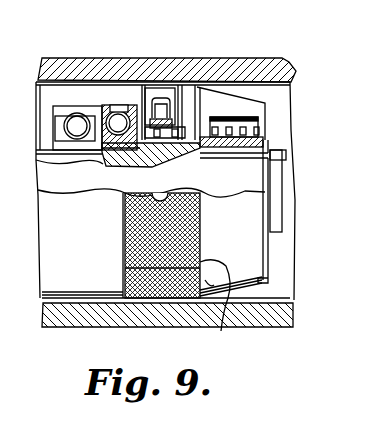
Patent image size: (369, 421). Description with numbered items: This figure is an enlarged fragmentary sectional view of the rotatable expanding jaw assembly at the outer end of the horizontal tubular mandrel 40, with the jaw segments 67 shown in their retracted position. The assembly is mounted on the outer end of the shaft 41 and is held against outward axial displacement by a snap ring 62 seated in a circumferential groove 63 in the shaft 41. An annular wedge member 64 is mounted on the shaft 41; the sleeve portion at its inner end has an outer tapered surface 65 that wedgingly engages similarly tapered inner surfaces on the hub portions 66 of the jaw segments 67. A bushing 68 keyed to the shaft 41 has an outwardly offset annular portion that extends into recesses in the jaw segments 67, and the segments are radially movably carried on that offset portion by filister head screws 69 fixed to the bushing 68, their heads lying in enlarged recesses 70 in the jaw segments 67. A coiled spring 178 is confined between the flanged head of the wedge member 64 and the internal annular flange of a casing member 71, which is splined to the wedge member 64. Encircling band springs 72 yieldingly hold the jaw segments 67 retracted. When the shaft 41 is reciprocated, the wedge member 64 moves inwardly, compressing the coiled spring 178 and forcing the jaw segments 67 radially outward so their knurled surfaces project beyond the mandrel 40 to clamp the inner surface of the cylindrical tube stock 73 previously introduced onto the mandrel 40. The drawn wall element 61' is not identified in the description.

The tubular mandrel 40 is at (68, 92).
The shaft 41 is at (281, 188).
The wall member 61' is at (188, 82).
The snap ring 62 is at (280, 138).
The circumferential groove 63 is at (268, 180).
The annular wedge member 64 is at (242, 153).
The outer tapered surface 65 is at (200, 157).
The hub portions 66 is at (170, 160).
The jaw segments 67 is at (193, 107).
The bushing 68 is at (140, 112).
The filister head screws 69 is at (150, 110).
The enlarged recesses 70 is at (165, 97).
The casing member 71 is at (263, 108).
The band springs 72 is at (148, 158).
The cylindrical tube stock 73 is at (279, 68).
The coiled spring 178 is at (238, 117).